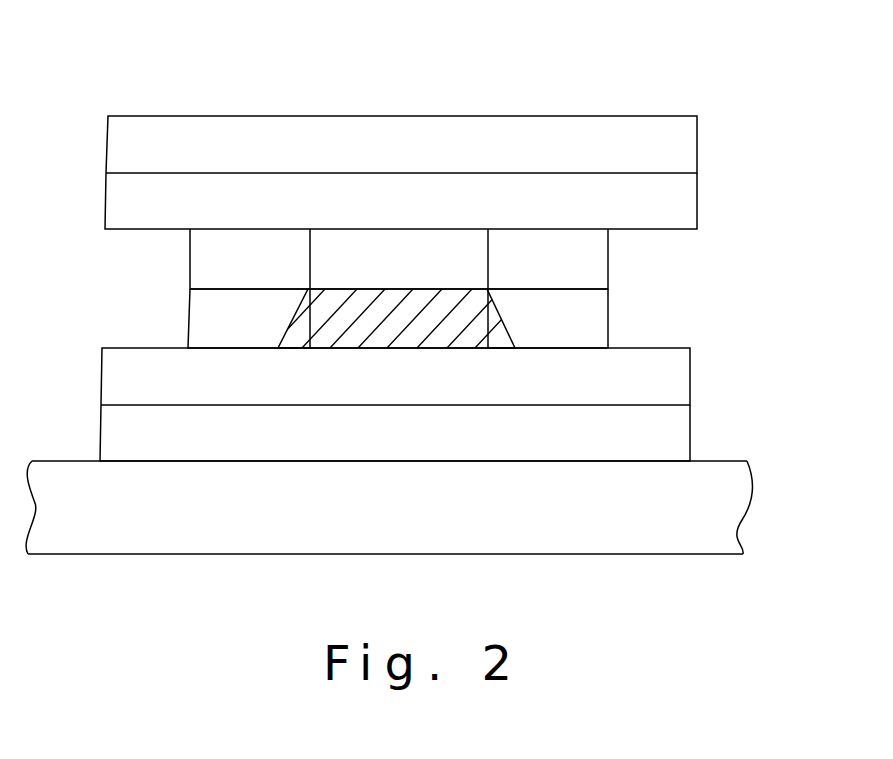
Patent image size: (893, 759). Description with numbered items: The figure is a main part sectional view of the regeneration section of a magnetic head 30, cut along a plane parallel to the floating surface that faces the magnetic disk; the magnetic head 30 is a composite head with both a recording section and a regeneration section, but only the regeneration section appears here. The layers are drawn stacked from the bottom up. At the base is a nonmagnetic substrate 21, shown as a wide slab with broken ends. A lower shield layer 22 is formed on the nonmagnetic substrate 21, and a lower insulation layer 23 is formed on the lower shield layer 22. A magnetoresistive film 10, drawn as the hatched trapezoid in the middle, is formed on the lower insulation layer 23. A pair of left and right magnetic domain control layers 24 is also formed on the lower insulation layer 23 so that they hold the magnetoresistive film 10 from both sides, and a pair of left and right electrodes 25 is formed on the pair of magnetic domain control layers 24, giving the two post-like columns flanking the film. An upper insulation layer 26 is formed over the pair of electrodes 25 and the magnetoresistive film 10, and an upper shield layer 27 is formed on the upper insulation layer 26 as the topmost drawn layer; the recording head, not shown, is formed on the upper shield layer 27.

The magnetic head 30 is at (744, 81).
The nonmagnetic substrate 21 is at (735, 492).
The lower shield layer 22 is at (677, 430).
The lower insulation layer 23 is at (677, 377).
The magnetoresistive film 10 is at (495, 340).
The magnetic domain control layers 24 is at (595, 300).
The electrodes 25 is at (595, 265).
The upper insulation layer 26 is at (675, 205).
The upper shield layer 27 is at (675, 162).